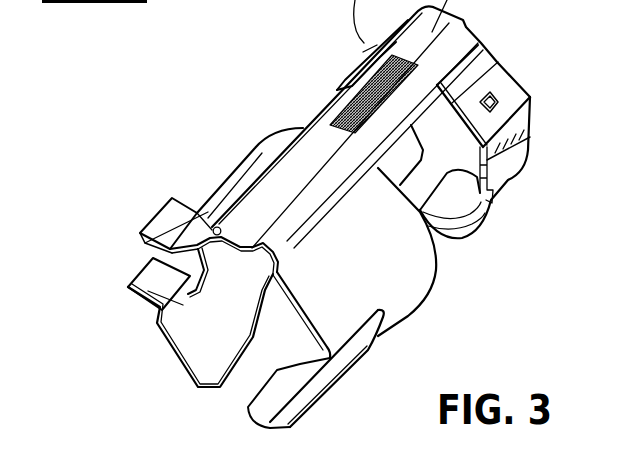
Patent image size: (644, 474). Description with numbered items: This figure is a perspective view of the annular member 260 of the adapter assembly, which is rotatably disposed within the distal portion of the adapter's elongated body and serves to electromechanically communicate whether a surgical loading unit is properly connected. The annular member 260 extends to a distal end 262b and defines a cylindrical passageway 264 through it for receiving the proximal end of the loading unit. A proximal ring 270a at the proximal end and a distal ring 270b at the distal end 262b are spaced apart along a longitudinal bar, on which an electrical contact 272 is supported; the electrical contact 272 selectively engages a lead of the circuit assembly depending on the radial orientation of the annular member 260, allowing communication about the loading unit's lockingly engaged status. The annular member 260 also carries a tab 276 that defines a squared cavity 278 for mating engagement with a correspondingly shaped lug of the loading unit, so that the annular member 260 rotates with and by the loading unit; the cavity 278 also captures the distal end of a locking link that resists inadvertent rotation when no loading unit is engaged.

The annular member 260 is at (250, 84).
The electrical contact 272 is at (342, 102).
The distal end 262b is at (228, 188).
The tab 276 is at (150, 220).
The cavity 278 is at (128, 287).
The distal ring 270b is at (187, 349).
The cylindrical passageway 264 is at (280, 324).
The proximal ring 270a is at (510, 90).